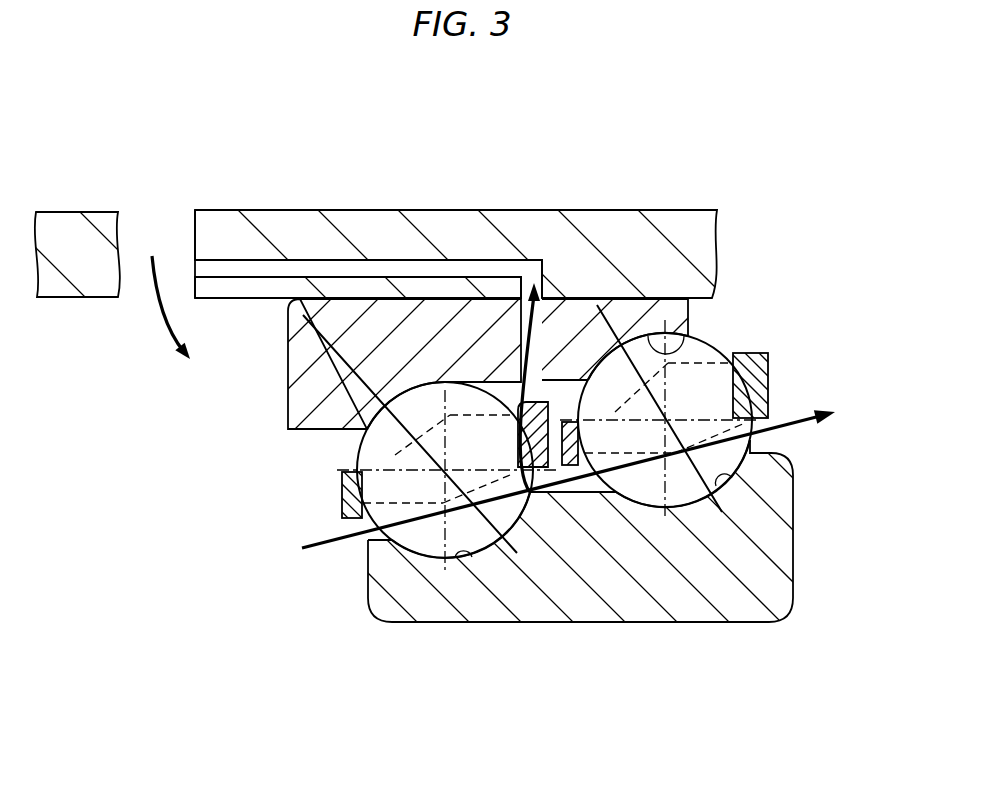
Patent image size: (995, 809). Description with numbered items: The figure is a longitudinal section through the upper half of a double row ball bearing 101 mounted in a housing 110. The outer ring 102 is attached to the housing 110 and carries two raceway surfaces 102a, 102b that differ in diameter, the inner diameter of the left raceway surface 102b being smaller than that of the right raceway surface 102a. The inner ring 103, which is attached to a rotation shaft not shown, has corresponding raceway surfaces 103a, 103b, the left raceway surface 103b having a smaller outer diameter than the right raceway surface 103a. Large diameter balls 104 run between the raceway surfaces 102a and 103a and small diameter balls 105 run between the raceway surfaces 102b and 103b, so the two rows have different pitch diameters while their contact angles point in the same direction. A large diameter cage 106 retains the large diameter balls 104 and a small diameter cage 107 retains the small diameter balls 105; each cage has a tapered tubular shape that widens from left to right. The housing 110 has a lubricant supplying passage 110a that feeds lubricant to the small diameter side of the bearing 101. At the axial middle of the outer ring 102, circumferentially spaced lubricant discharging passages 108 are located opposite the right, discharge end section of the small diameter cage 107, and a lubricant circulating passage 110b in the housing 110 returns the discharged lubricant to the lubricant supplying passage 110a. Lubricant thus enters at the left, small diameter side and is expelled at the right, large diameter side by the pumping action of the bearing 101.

The double row ball bearing 101 is at (830, 195).
The outer ring 102 is at (288, 375).
The raceway surface 102a is at (712, 332).
The raceway surface 102b is at (418, 395).
The inner ring 103 is at (663, 622).
The raceway surface 103a is at (740, 480).
The raceway surface 103b is at (477, 556).
The large diameter ball 104 is at (757, 430).
The small diameter ball 105 is at (350, 548).
The large diameter cage 106 is at (772, 372).
The small diameter cage 107 is at (338, 498).
The lubricant discharging passage 108 is at (573, 300).
The housing 110 is at (307, 208).
The lubricant supplying passage 110a is at (193, 238).
The lubricant circulating passage 110b is at (416, 262).